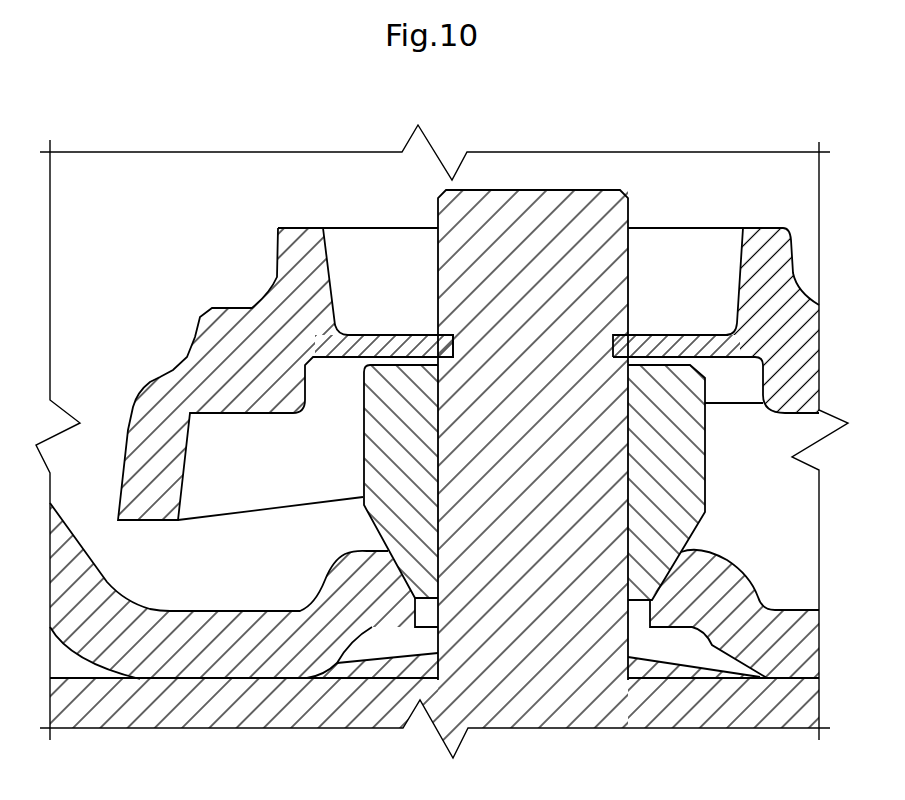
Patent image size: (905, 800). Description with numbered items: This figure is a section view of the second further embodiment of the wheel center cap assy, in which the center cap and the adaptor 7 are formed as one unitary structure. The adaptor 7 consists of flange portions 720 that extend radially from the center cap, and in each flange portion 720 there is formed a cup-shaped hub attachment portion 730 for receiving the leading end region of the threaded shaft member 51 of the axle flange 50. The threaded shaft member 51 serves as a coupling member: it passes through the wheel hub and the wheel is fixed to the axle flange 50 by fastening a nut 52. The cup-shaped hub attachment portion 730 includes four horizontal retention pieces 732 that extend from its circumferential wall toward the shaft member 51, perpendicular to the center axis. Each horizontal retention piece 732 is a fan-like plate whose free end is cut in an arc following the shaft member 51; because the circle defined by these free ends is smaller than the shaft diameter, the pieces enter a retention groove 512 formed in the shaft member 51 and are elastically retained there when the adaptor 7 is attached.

The adaptor 7 is at (205, 293).
The flange portion 720 is at (305, 228).
The horizontal retention piece 732 is at (388, 348).
The retention groove 512 is at (447, 348).
The threaded shaft member 51 is at (535, 212).
The cup-shaped hub attachment portion 730 is at (725, 243).
The nut 52 is at (697, 462).
The axle flange 50 is at (333, 572).